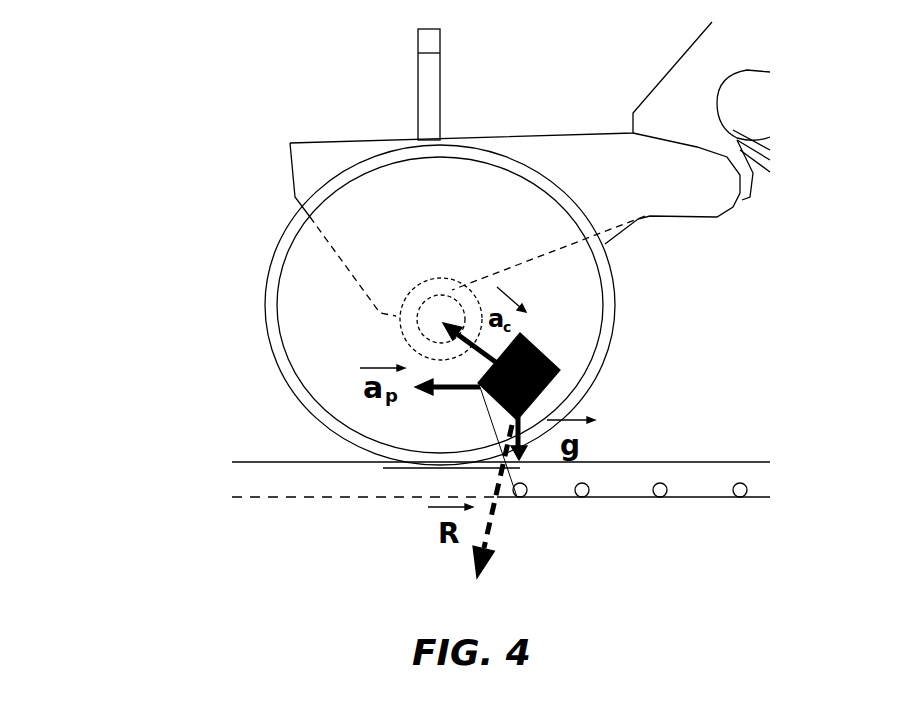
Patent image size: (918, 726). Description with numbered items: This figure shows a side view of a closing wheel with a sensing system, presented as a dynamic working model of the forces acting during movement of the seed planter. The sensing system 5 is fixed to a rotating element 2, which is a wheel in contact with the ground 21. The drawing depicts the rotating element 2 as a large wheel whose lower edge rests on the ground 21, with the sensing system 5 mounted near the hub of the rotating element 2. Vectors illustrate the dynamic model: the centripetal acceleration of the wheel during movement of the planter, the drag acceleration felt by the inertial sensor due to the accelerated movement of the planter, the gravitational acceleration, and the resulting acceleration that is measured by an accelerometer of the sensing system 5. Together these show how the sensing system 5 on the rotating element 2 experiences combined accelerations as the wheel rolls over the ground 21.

The rotating element 2 is at (265, 290).
The sensing system 5 is at (560, 370).
The ground 21 is at (270, 460).